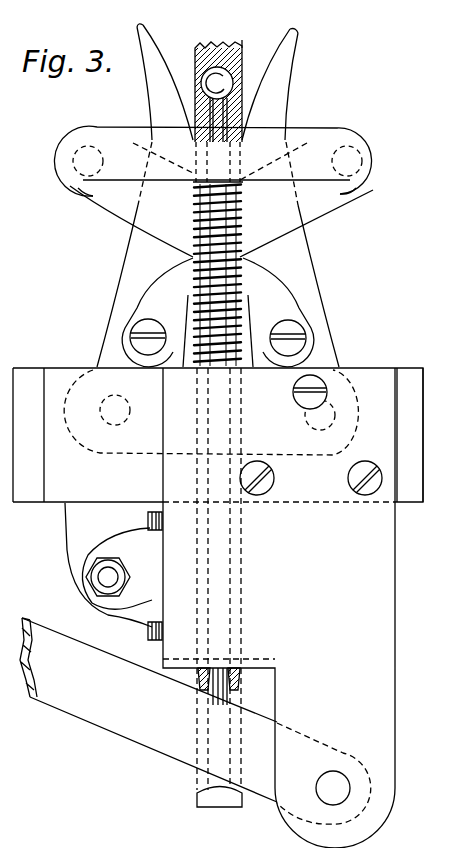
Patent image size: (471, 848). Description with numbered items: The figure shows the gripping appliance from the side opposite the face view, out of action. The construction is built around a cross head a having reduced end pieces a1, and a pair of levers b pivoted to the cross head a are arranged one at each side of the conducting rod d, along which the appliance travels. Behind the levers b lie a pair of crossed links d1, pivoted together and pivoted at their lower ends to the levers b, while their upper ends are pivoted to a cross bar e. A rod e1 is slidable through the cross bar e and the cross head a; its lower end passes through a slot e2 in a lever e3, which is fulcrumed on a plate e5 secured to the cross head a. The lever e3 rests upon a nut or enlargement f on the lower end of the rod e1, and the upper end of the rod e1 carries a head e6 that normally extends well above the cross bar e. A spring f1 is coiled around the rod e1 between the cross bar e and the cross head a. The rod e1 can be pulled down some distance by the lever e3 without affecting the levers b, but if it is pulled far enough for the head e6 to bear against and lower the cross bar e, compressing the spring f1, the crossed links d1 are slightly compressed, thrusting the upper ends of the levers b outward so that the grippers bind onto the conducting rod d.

The cross head a is at (218, 435).
The reduced end pieces a1 is at (36, 372).
The levers b is at (157, 113).
The conducting rod d is at (200, 58).
The crossed links d1 is at (338, 213).
The cross bar e is at (308, 152).
The rod e1 is at (217, 120).
The slot e2 is at (243, 753).
The lever e3 is at (88, 710).
The plate e5 is at (370, 597).
The head e6 is at (233, 72).
The nut or enlargement f is at (200, 798).
The spring f1 is at (240, 205).